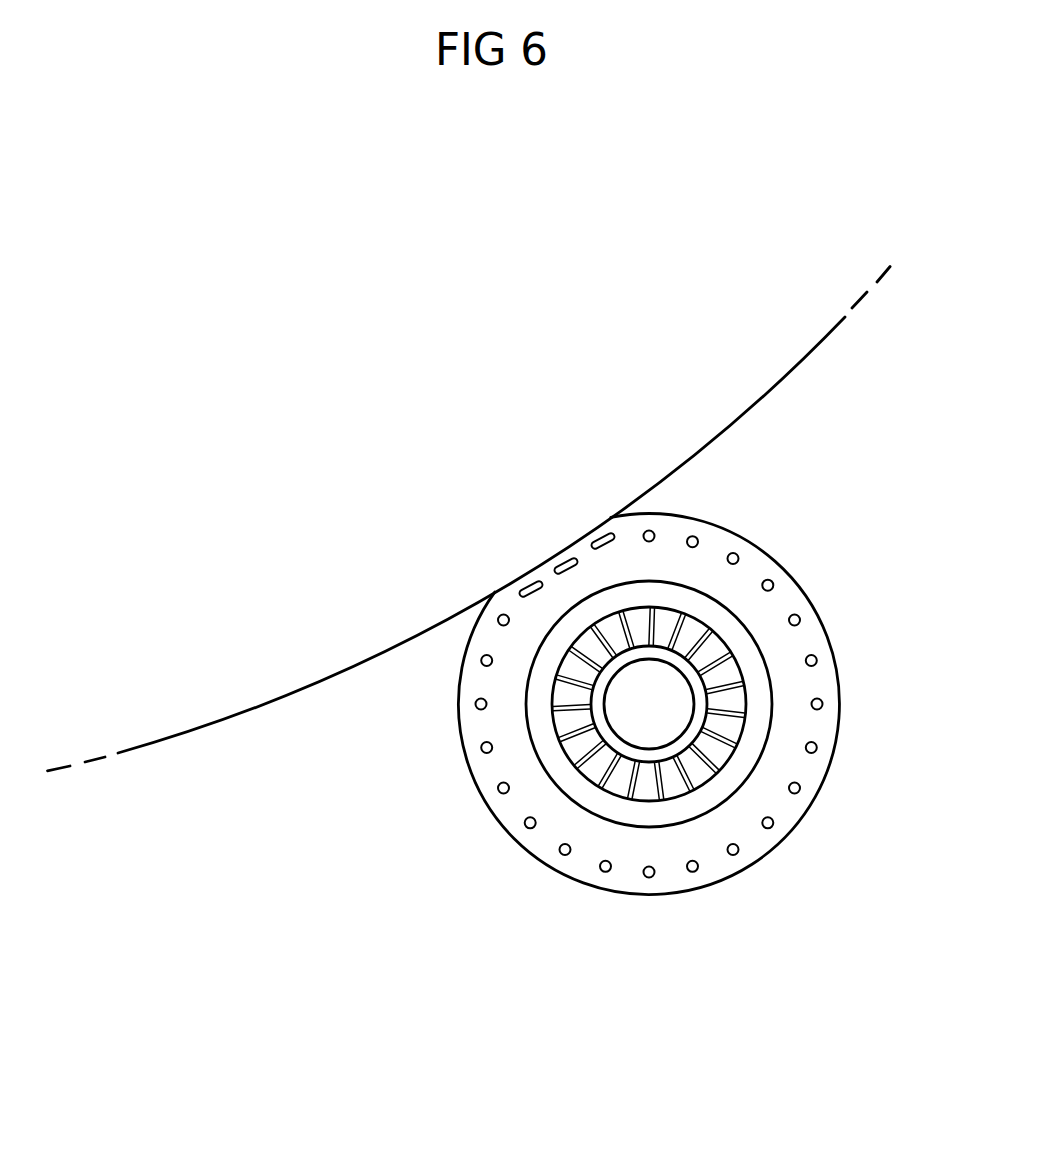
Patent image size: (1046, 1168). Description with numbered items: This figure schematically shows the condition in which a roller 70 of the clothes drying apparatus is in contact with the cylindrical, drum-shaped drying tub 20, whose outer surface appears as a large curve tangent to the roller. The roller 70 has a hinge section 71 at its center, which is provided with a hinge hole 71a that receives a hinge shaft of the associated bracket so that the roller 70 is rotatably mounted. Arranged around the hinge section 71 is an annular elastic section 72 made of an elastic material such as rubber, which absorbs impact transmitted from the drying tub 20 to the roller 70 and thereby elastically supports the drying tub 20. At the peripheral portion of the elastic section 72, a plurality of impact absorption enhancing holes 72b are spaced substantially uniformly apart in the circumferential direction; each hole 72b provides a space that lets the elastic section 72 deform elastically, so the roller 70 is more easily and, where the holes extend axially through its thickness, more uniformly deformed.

The drying tub 20 is at (258, 702).
The roller 70 is at (691, 716).
The hinge section 71 is at (602, 778).
The hinge hole 71a is at (641, 725).
The elastic section 72 is at (704, 704).
The impact absorption enhancing hole 72b is at (816, 660).